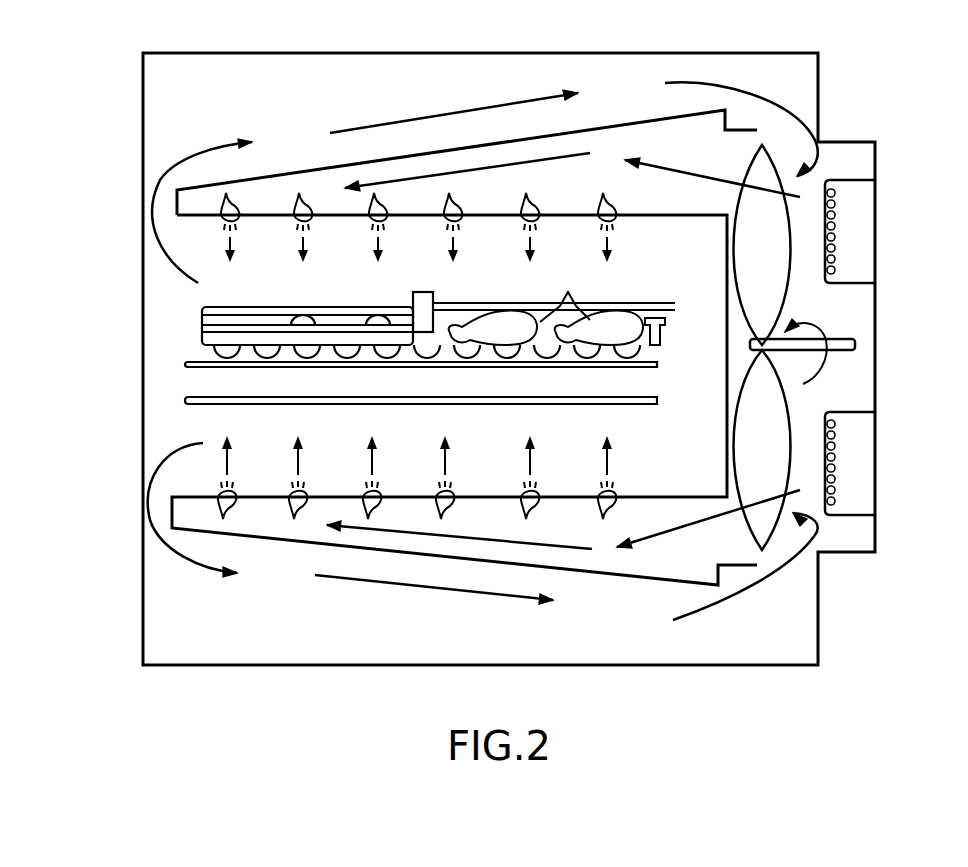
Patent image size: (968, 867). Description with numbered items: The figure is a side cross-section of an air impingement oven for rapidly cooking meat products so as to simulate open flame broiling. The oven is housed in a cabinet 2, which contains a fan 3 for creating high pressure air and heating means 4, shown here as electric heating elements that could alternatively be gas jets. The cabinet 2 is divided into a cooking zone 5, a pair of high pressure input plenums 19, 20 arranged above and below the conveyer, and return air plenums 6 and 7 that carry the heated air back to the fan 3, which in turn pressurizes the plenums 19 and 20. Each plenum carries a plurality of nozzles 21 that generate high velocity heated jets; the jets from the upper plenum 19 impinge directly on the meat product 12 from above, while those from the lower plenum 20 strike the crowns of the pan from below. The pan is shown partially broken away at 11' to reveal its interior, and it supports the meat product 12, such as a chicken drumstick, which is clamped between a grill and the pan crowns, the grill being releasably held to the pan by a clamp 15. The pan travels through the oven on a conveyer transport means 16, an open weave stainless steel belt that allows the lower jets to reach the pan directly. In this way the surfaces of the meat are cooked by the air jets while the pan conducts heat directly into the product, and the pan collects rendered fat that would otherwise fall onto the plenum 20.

The cabinet 2 is at (820, 73).
The fan 3 is at (772, 239).
The heating means 4 is at (835, 232).
The cooking zone 5 is at (280, 295).
The return air plenum 6 is at (314, 109).
The return air plenum 7 is at (296, 618).
The broken-away portion of pan 11' is at (647, 307).
The meat product 12 is at (546, 307).
The clamp 15 is at (433, 296).
The conveyer transport means 16 is at (185, 401).
The high pressure input plenum 19 is at (672, 154).
The high pressure input plenum 20 is at (672, 572).
The nozzles 21 is at (375, 220).